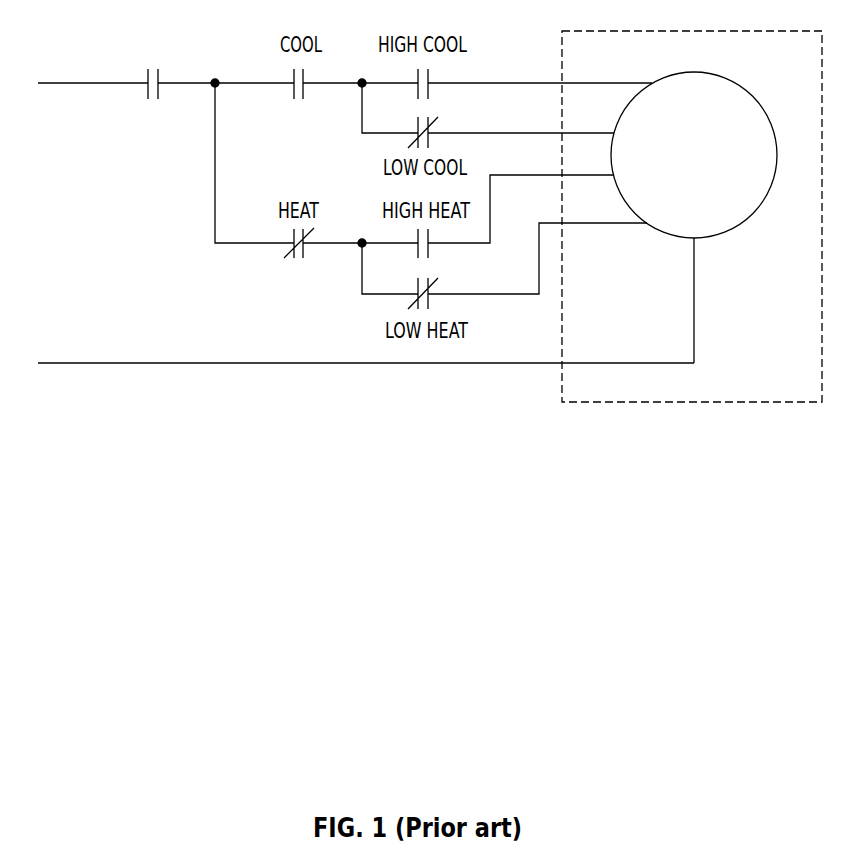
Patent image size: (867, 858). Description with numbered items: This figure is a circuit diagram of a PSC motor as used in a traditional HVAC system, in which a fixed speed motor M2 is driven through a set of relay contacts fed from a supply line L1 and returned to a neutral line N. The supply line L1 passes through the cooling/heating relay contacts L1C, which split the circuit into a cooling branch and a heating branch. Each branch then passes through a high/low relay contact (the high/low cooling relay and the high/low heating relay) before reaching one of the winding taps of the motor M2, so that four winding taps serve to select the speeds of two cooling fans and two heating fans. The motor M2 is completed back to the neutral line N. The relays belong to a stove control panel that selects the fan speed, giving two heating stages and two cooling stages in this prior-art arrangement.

The line supply conductor L1 is at (126, 76).
The neutral conductor N is at (366, 348).
The relay contacts L1C is at (286, 157).
The motor M2 is at (692, 216).